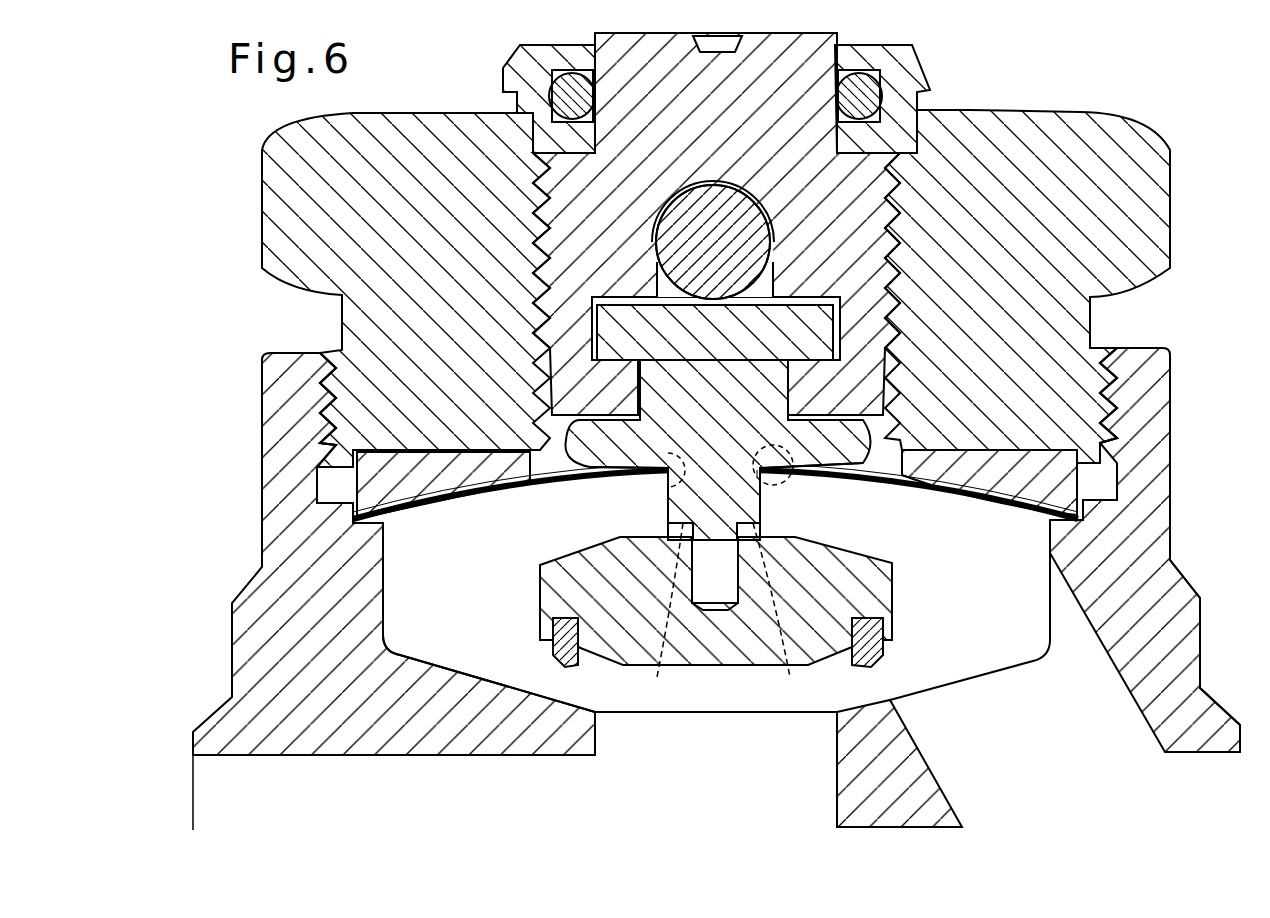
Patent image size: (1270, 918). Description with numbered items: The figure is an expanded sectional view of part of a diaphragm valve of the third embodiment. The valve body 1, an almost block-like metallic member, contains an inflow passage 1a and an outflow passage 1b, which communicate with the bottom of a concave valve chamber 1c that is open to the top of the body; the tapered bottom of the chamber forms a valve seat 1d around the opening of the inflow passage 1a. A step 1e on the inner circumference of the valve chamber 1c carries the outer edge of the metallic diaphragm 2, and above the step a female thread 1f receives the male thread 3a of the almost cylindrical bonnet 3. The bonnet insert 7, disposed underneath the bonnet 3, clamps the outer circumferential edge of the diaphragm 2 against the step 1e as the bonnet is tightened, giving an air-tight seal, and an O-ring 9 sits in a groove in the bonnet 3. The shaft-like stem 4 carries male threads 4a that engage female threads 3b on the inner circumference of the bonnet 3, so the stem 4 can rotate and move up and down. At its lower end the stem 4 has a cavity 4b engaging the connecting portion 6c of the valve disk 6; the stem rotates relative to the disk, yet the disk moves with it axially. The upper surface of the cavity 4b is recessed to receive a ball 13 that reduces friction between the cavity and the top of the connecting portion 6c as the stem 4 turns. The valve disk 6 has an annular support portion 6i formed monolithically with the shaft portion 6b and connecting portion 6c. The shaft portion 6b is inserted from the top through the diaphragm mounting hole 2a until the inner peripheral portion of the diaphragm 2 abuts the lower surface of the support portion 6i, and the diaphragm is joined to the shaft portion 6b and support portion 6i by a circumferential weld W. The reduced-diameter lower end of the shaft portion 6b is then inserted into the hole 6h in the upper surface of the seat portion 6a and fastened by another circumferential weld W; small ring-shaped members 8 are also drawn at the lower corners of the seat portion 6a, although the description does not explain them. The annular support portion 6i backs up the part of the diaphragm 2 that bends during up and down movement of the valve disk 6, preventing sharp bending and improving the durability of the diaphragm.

The valve body 1 is at (233, 634).
The inflow passage 1a is at (240, 780).
The outflow passage 1b is at (1090, 707).
The valve chamber 1c is at (440, 597).
The valve seat 1d is at (583, 707).
The step 1e is at (1060, 525).
The female thread 1f is at (1110, 413).
The metallic diaphragm 2 is at (922, 494).
The diaphragm mounting hole 2a is at (757, 477).
The bonnet 3 is at (262, 230).
The male thread 3a is at (330, 385).
The female threads 3b is at (342, 313).
The stem 4 is at (800, 172).
The male threads 4a is at (897, 222).
The cavity 4b is at (920, 297).
The valve disk 6 is at (757, 666).
The seat portion 6a is at (610, 587).
The shaft portion 6b is at (715, 473).
The connecting portion 6c is at (620, 332).
The hole 6h is at (713, 598).
The annular support portion 6i is at (830, 447).
The bonnet insert 7 is at (1057, 470).
The seal ring 8 is at (865, 645).
The O-ring 9 is at (577, 98).
The ball 13 is at (700, 243).
The circumferential weld W is at (668, 485).